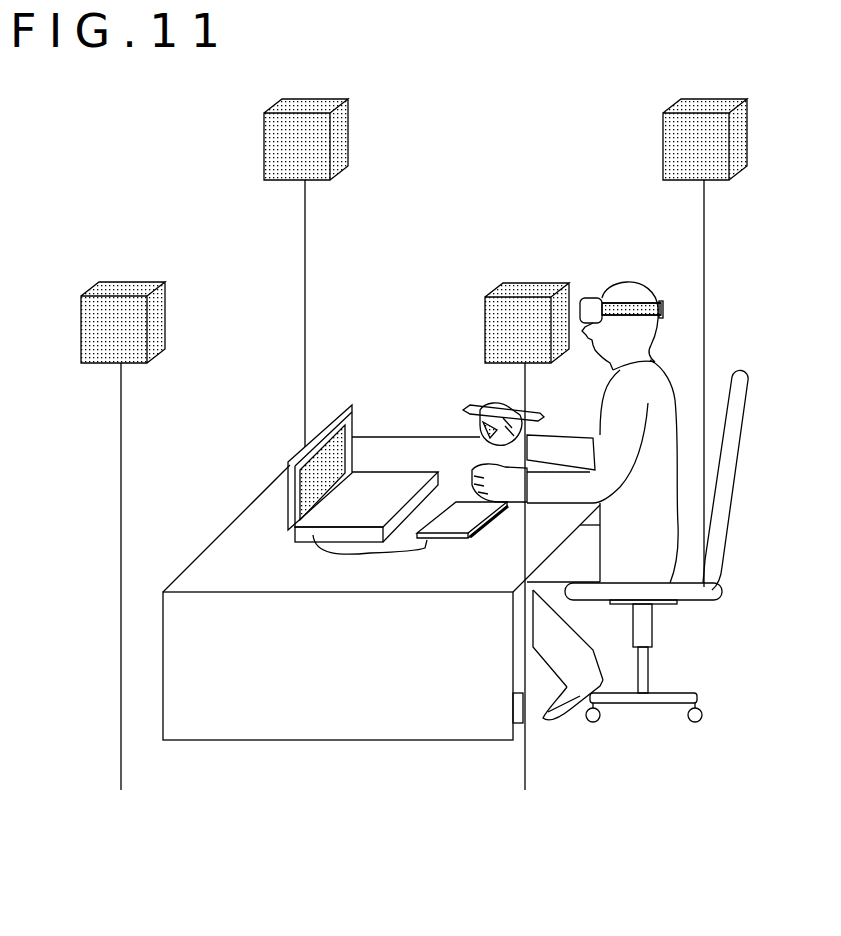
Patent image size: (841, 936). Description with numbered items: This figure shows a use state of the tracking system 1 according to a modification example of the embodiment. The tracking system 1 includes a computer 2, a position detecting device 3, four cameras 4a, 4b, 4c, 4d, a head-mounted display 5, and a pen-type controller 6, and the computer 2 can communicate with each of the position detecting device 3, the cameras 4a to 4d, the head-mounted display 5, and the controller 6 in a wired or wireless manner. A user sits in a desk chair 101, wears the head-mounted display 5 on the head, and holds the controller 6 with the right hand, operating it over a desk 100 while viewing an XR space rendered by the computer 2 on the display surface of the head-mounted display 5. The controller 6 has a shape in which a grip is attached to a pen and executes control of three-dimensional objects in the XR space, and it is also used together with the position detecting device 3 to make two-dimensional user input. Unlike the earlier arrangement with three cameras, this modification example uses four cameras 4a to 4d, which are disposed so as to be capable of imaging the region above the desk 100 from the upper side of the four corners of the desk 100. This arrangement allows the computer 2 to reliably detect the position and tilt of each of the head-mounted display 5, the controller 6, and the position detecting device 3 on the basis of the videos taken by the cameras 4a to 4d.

The tracking system 1 is at (225, 395).
The computer 2 is at (388, 480).
The position detecting device 3 is at (463, 488).
The camera 4a is at (123, 283).
The camera 4b is at (526, 283).
The camera 4c is at (712, 99).
The camera 4d is at (306, 99).
The head-mounted display 5 is at (592, 298).
The controller 6 is at (483, 410).
The desk 100 is at (217, 550).
The desk chair 101 is at (710, 572).